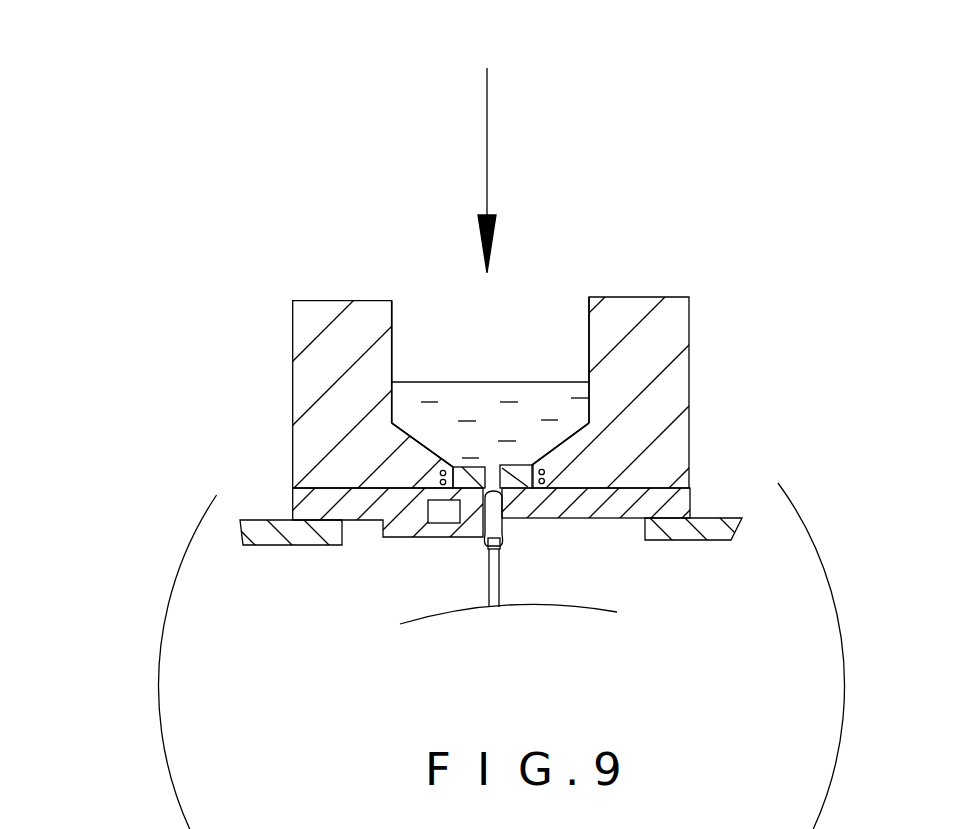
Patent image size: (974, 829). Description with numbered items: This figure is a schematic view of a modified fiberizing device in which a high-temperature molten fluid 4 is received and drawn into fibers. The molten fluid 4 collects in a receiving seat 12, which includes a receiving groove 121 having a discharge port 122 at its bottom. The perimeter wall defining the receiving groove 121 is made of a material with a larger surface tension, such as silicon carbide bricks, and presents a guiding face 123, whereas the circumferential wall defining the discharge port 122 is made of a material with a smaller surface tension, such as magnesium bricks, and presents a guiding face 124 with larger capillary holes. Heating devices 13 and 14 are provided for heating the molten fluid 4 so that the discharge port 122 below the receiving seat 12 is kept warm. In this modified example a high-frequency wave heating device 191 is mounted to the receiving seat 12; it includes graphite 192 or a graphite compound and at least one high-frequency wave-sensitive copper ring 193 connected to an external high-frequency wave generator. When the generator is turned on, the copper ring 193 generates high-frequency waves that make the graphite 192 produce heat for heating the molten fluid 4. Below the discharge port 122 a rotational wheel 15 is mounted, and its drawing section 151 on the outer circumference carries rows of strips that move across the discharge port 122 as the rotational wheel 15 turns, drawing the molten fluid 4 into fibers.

The high-temperature molten fluid 4 is at (487, 382).
The receiving seat 12 is at (718, 377).
The heating device 13 is at (778, 313).
The heating device 14 is at (445, 512).
The rotational wheel 15 is at (492, 604).
The receiving groove 121 is at (538, 335).
The discharge port 122 is at (492, 510).
The guiding face 123 is at (545, 453).
The guiding face 124 is at (432, 488).
The drawing section 151 is at (503, 598).
The high-frequency wave heating device 191 is at (468, 464).
The graphite 192 is at (452, 466).
The high-frequency wave-sensitive copper ring 193 is at (440, 468).